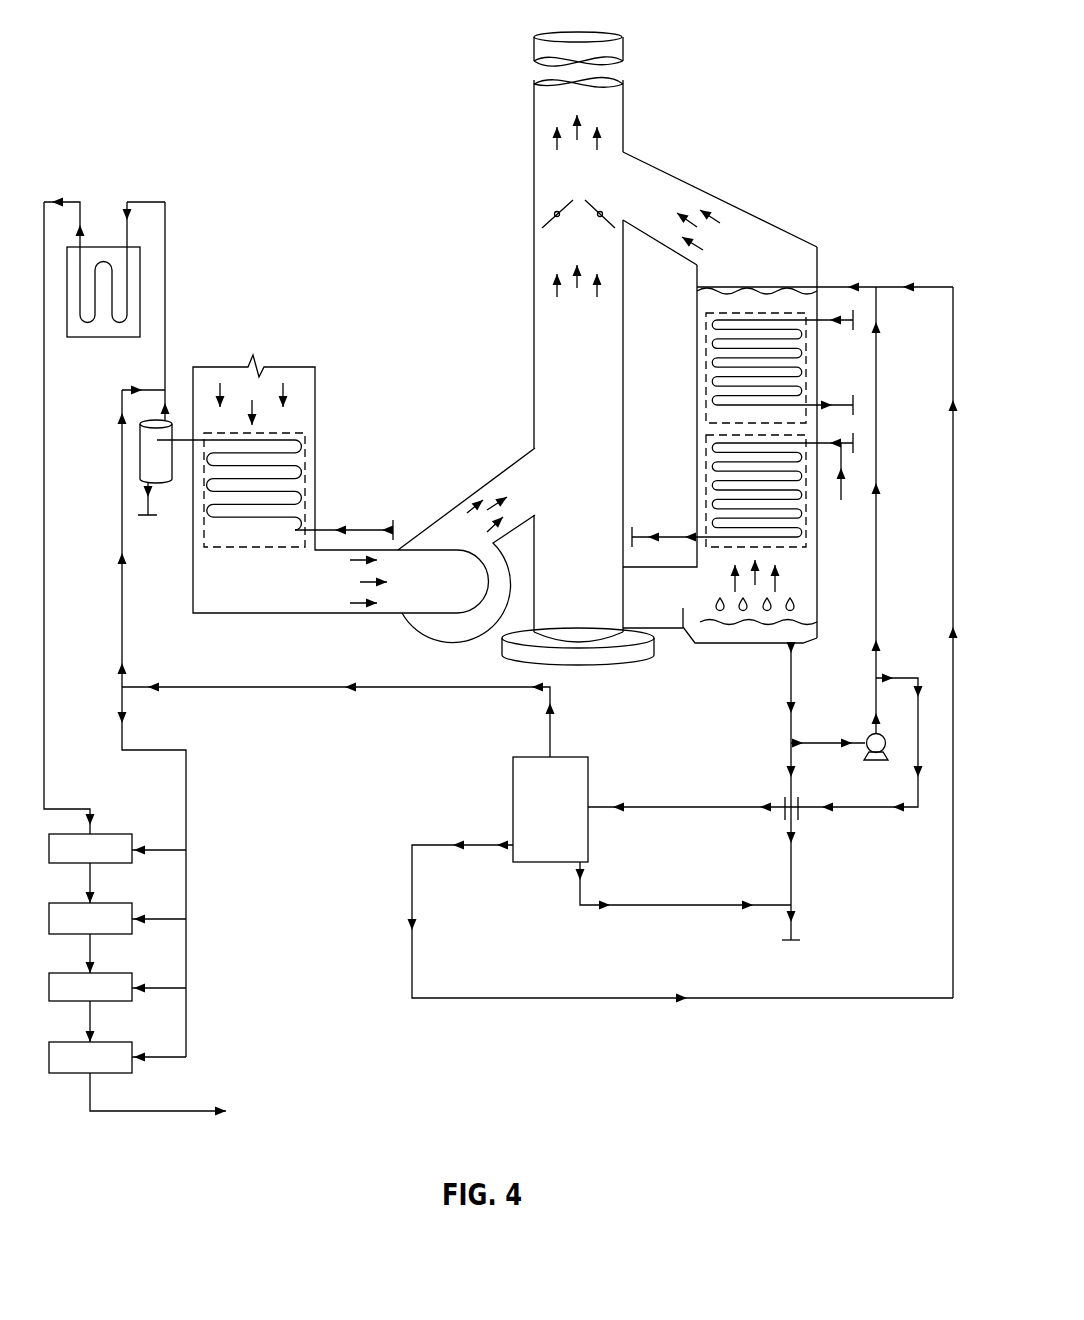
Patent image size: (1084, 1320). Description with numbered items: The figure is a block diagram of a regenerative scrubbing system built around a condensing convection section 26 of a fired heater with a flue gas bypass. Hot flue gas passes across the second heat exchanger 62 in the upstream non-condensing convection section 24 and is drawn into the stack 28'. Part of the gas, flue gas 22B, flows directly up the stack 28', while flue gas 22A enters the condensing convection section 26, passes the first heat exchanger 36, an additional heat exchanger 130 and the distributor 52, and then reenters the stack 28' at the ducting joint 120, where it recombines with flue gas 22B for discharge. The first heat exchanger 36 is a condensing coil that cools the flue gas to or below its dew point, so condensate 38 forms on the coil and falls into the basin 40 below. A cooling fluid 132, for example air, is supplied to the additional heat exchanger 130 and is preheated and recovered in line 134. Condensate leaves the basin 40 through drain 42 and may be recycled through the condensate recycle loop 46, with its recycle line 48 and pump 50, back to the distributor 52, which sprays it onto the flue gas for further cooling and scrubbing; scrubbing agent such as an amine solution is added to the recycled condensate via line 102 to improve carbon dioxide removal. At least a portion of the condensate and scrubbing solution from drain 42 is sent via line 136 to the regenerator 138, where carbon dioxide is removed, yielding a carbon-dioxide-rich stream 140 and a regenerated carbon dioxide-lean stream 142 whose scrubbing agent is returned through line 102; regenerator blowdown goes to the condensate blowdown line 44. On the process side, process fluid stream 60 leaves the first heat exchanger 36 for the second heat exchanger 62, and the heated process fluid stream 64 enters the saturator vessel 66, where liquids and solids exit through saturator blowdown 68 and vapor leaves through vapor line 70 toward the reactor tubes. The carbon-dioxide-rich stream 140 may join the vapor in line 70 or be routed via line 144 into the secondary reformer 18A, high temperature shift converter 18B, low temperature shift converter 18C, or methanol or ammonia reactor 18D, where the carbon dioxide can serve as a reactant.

The stack 28' is at (558, 348).
The ducting joint 120 is at (624, 151).
The flue gas 22B is at (555, 298).
The condensing convection section 26 is at (866, 218).
The scrubbing agent line 102 is at (886, 287).
The distributor 52 is at (765, 287).
The additional heat exchanger 130 is at (711, 357).
The cooling fluid 132 is at (851, 333).
The recovery line 134 is at (846, 418).
The first heat exchanger 36 is at (711, 480).
The recycle line 48 is at (878, 463).
The condensate recycle loop 46 is at (885, 554).
The flue gas 22A is at (729, 575).
The basin 40 is at (806, 630).
The condensate 38 is at (696, 640).
The drain 42 is at (789, 687).
The pump 50 is at (862, 749).
The line 136 is at (859, 810).
The condensate blowdown line 44 is at (794, 912).
The regenerator 138 is at (515, 793).
The carbon dioxide-lean stream 142 is at (470, 847).
The carbon-dioxide-rich stream 140 is at (463, 688).
The line 144 is at (120, 700).
The process fluid stream 64 is at (178, 438).
The vapor line 70 is at (164, 392).
The saturator blowdown 68 is at (144, 505).
The saturator vessel 66 is at (158, 484).
The non-condensing convection section 24 is at (340, 392).
The second heat exchanger 62 is at (306, 462).
The process fluid stream 60 is at (356, 536).
The secondary reformer 18A is at (101, 832).
The high temperature shift converter 18B is at (101, 902).
The low temperature shift converter 18C is at (101, 972).
The methanol or ammonia reactor 18D is at (101, 1041).